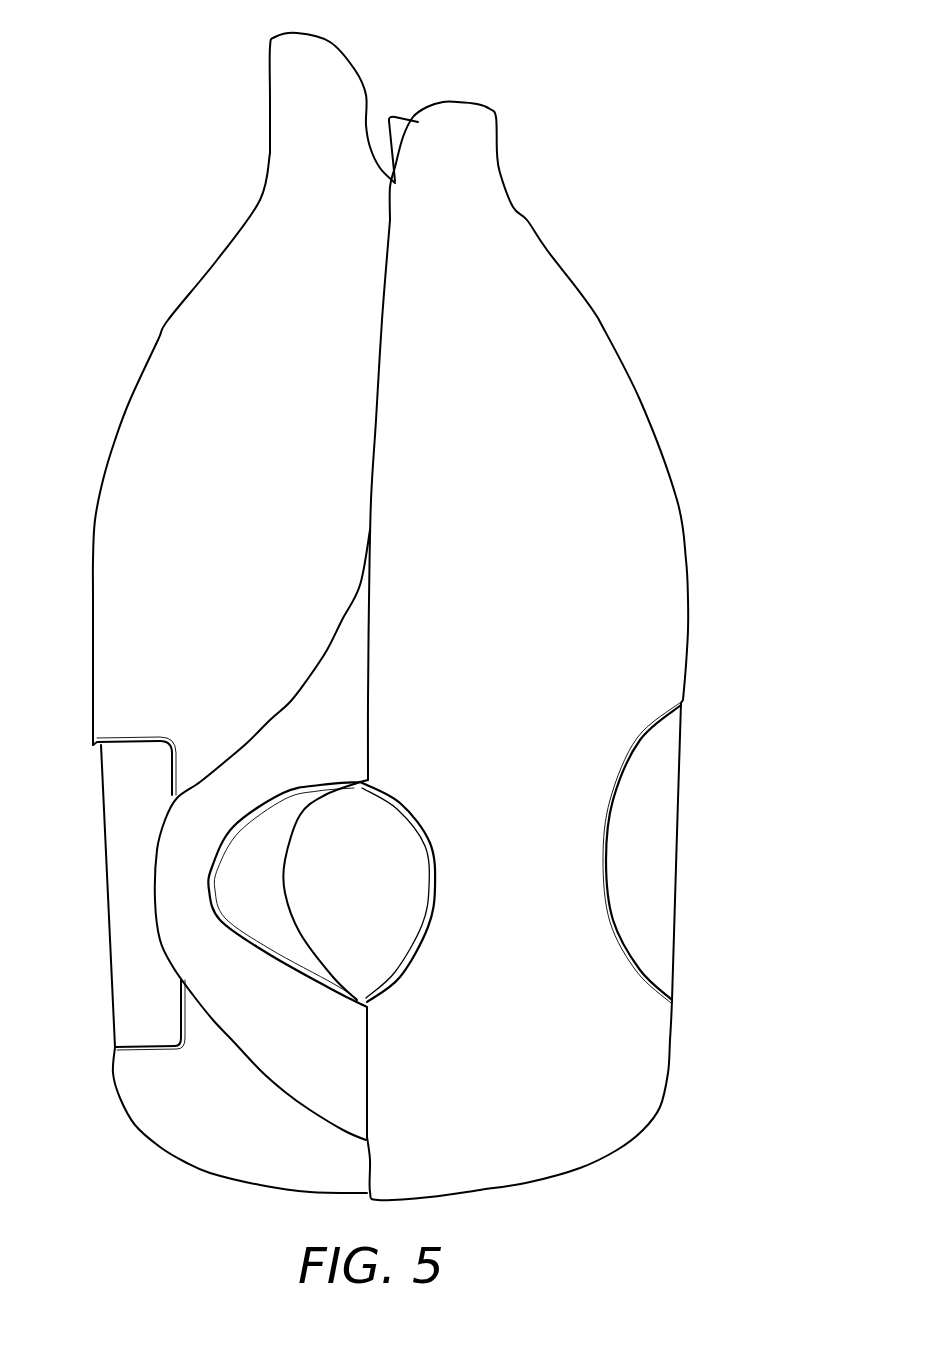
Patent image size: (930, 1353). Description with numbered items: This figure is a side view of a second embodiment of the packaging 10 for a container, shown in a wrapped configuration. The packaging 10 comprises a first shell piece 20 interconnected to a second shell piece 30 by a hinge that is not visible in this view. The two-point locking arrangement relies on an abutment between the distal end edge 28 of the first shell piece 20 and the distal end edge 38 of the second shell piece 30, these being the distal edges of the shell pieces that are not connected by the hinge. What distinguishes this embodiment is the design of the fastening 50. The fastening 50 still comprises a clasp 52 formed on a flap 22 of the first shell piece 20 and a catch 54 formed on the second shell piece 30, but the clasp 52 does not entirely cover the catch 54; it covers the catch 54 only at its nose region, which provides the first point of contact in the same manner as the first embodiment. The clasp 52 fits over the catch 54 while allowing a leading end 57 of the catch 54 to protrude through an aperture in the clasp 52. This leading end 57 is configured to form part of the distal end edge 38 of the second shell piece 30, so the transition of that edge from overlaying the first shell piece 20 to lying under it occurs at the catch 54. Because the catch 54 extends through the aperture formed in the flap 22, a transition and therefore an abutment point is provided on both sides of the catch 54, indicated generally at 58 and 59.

The packaging 10 is at (572, 63).
The first shell piece 20 is at (584, 327).
The flap 22 is at (178, 940).
The distal end edge of the first shell piece 28 is at (383, 319).
The second shell piece 30 is at (172, 326).
The distal end edge of the second shell piece 38 is at (437, 883).
The fastening 50 is at (418, 713).
The clasp 52 is at (232, 879).
The catch 54 is at (296, 874).
The leading end of the catch 57 is at (396, 912).
The abutment point 58 is at (368, 1008).
The abutment point 59 is at (369, 779).